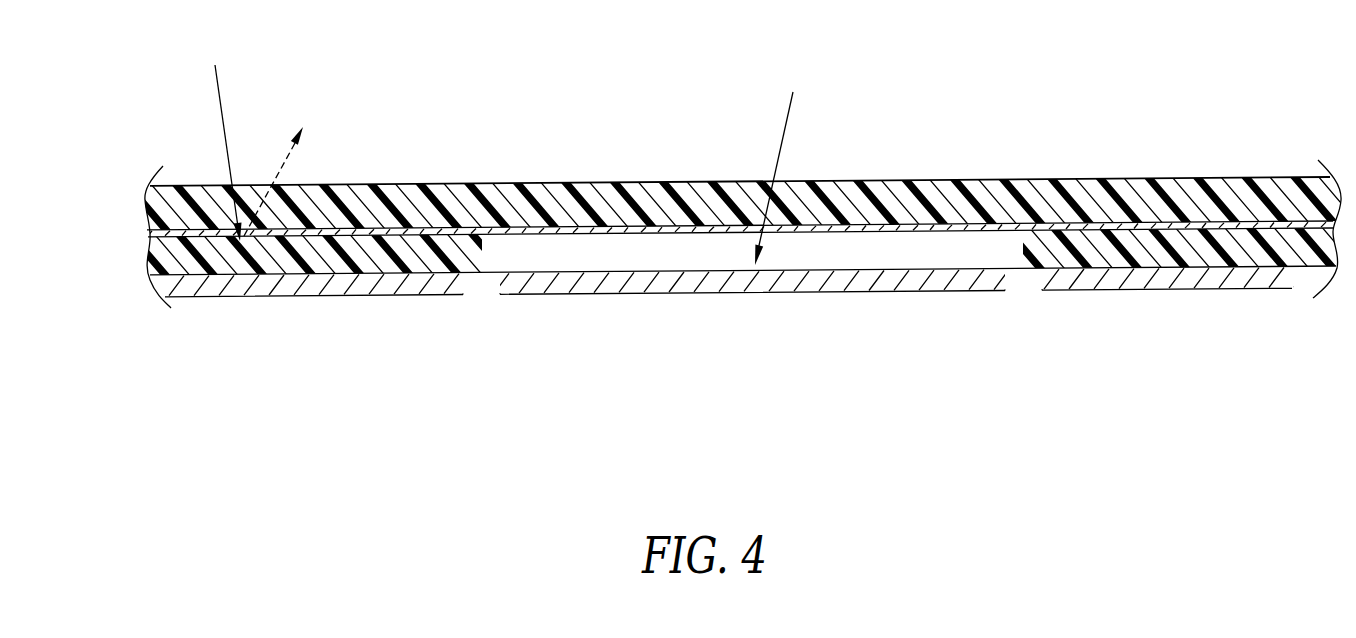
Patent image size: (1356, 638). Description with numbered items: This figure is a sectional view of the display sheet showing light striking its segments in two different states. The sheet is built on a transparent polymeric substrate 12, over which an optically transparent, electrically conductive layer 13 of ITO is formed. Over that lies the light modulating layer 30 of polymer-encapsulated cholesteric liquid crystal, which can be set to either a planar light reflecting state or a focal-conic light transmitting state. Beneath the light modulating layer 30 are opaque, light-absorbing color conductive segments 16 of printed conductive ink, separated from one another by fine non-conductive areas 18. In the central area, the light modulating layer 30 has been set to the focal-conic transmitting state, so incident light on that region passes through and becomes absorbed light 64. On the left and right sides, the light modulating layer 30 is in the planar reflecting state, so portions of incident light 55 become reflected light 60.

The substrate 12 is at (145, 213).
The transparent, electrically conductive layer 13 is at (152, 238).
The light modulating layer 30 is at (150, 255).
The color conductive segments 16 is at (251, 298).
The non-conductive areas 18 is at (479, 293).
The incident light 55 is at (222, 107).
The reflected light 60 is at (279, 172).
The absorbed light 64 is at (784, 138).